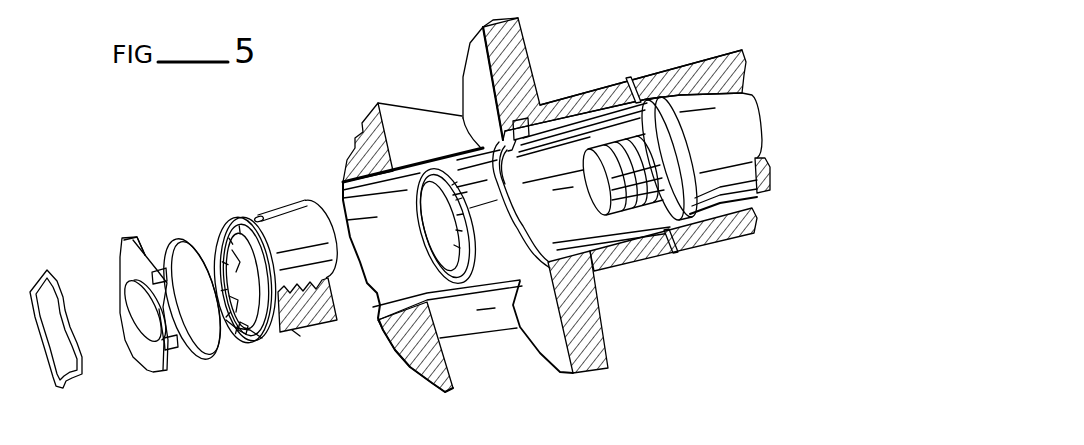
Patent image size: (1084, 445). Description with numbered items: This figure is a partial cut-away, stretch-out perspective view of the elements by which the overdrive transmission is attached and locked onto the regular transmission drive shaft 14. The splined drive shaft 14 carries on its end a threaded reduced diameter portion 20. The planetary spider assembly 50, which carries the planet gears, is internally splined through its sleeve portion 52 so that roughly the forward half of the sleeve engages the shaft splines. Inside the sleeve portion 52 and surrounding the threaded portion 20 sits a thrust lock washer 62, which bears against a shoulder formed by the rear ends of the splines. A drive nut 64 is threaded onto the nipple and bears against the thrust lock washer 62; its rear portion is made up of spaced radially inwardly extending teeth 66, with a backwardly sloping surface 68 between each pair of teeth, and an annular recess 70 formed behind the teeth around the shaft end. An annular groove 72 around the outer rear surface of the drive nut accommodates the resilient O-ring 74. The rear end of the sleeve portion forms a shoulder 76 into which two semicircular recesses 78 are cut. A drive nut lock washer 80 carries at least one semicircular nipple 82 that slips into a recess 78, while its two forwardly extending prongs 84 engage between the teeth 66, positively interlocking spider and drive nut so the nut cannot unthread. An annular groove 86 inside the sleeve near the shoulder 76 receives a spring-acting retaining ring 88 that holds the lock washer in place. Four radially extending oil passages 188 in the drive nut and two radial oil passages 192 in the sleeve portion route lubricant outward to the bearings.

The drive shaft 14 is at (721, 152).
The reduced diameter portion 20 is at (597, 180).
The planetary spider assembly 50 is at (533, 45).
The sleeve portion 52 is at (693, 72).
The thrust lock washer 62 is at (420, 190).
The drive nut 64 is at (292, 200).
The teeth 66 is at (217, 248).
The backwardly sloping surface 68 is at (243, 333).
The annular recess 70 is at (221, 320).
The annular groove 72 is at (240, 216).
The resilient O-ring 74 is at (197, 353).
The shoulder 76 is at (510, 249).
The semicircular recesses 78 is at (519, 138).
The drive nut lock washer 80 is at (150, 377).
The semicircular nipple 82 is at (127, 240).
The prongs 84 is at (155, 270).
The annular groove 86 is at (522, 215).
The retaining ring 88 is at (62, 388).
The oil passages 188 is at (267, 218).
The oil passages 192 is at (629, 82).